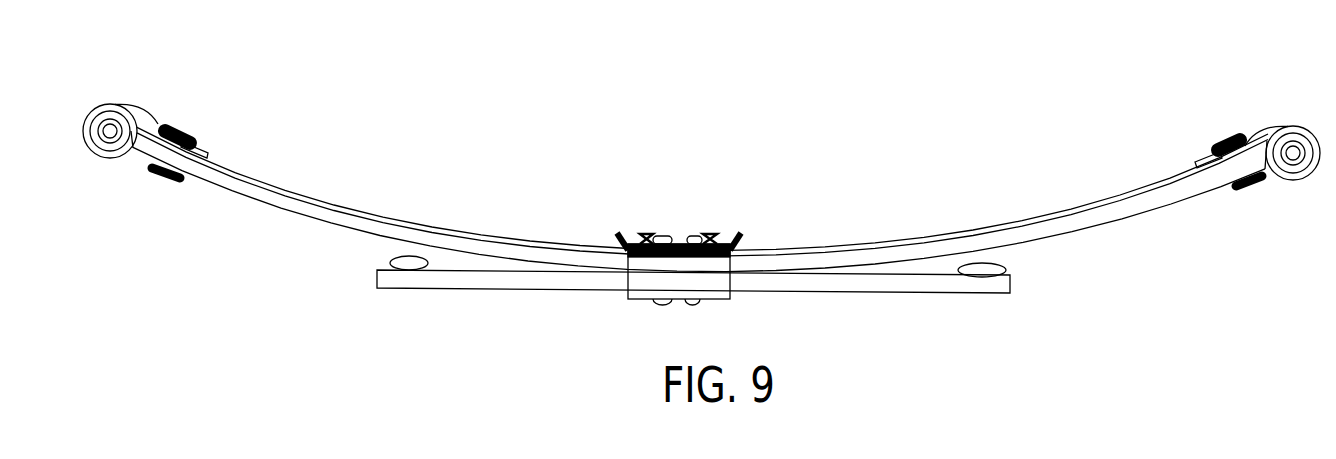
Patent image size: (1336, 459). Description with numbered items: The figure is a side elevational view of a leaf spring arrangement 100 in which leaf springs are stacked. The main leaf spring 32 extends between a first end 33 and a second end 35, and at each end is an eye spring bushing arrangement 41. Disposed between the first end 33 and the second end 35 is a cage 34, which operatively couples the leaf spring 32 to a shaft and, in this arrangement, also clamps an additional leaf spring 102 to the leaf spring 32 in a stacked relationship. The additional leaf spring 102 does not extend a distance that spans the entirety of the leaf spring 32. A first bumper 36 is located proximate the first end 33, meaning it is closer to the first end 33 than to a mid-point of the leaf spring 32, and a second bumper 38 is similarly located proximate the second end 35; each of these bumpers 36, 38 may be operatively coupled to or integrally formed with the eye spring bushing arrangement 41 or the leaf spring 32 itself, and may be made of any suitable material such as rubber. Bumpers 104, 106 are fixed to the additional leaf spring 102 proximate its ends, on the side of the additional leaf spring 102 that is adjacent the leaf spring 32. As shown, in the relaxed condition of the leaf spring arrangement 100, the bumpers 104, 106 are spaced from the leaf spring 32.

The leaf spring 32 is at (1027, 235).
The first end 33 is at (133, 158).
The cage 34 is at (683, 263).
The second end 35 is at (1270, 177).
The first bumper 36 is at (177, 122).
The second bumper 38 is at (1222, 143).
The eye spring bushing arrangement 41 is at (128, 86).
The leaf spring arrangement 100 is at (463, 208).
The additional leaf spring 102 is at (860, 284).
The bumper 104 is at (395, 263).
The bumper 106 is at (1012, 278).